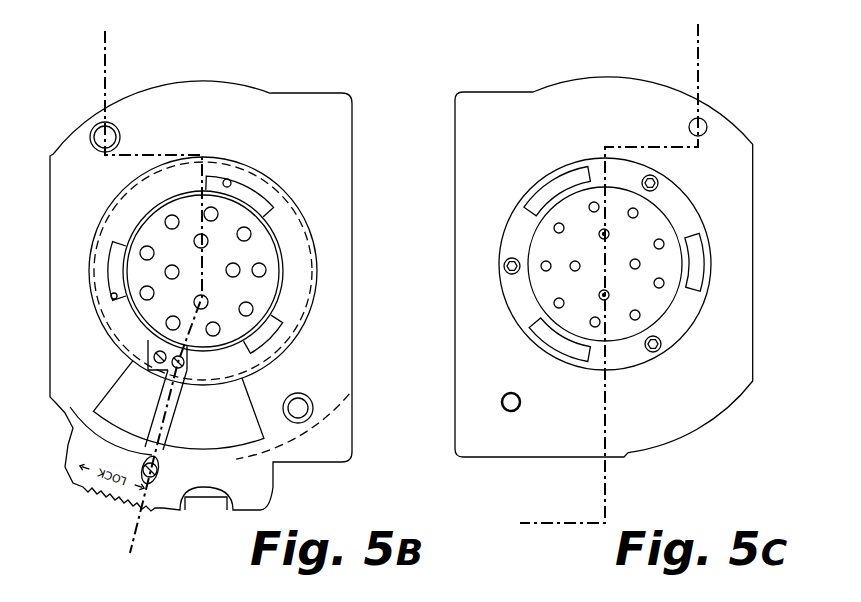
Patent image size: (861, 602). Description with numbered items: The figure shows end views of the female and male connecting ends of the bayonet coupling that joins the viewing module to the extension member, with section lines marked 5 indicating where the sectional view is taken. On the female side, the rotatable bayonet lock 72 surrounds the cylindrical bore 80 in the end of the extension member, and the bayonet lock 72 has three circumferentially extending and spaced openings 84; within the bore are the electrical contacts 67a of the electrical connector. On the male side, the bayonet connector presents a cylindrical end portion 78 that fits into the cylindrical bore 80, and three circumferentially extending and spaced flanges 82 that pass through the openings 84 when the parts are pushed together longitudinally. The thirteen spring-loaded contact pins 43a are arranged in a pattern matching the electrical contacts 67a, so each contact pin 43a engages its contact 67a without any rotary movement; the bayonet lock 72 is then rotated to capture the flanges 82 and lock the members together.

In FIG. 5B, the section line 5- 5 is at (105, 31).
In FIG. 5C, the section line 5- 5 is at (597, 275).
In FIG. 5B, the female bayonet lock 72 is at (288, 210).
In FIG. 5B, the cylindrical bore 80 is at (250, 343).
In FIG. 5B, the circumferentially extending and spaced openings 84 is at (222, 183).
In FIG. 5B, the electrical contacts 67a is at (233, 270).
In FIG. 5C, the cylindrical end portion 78 is at (535, 228).
In FIG. 5C, the circumferentially extending and spaced flanges 82 is at (582, 182).
In FIG. 5C, the contact pins 43a is at (638, 213).